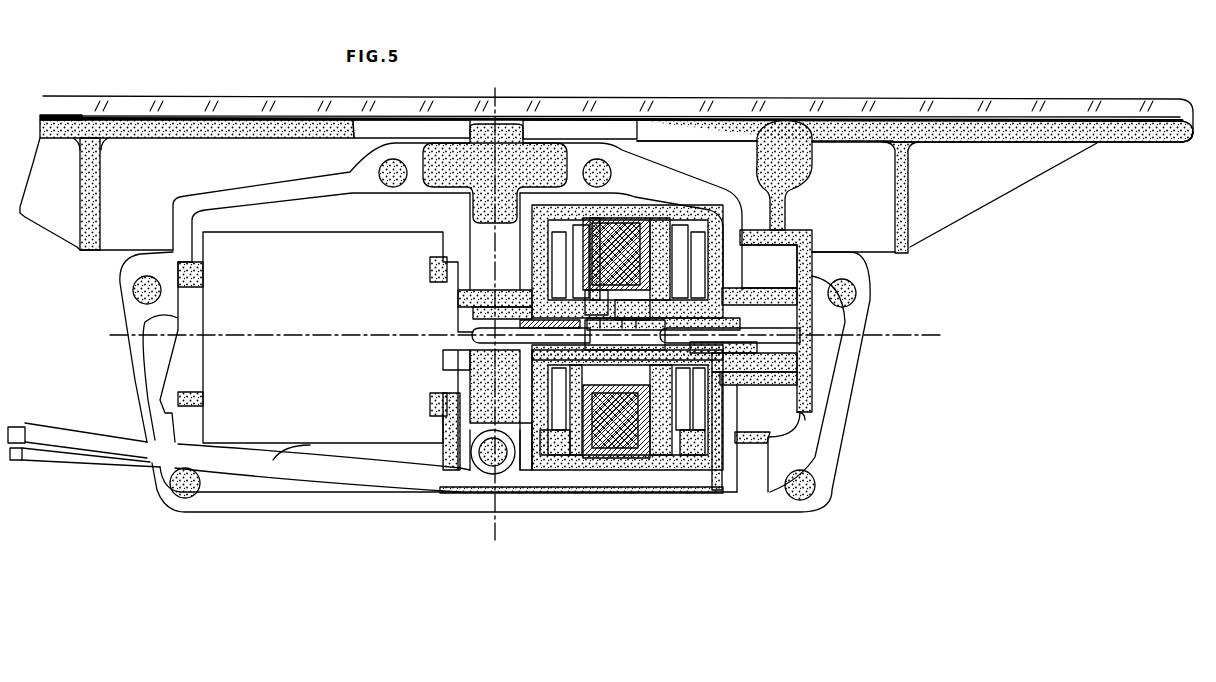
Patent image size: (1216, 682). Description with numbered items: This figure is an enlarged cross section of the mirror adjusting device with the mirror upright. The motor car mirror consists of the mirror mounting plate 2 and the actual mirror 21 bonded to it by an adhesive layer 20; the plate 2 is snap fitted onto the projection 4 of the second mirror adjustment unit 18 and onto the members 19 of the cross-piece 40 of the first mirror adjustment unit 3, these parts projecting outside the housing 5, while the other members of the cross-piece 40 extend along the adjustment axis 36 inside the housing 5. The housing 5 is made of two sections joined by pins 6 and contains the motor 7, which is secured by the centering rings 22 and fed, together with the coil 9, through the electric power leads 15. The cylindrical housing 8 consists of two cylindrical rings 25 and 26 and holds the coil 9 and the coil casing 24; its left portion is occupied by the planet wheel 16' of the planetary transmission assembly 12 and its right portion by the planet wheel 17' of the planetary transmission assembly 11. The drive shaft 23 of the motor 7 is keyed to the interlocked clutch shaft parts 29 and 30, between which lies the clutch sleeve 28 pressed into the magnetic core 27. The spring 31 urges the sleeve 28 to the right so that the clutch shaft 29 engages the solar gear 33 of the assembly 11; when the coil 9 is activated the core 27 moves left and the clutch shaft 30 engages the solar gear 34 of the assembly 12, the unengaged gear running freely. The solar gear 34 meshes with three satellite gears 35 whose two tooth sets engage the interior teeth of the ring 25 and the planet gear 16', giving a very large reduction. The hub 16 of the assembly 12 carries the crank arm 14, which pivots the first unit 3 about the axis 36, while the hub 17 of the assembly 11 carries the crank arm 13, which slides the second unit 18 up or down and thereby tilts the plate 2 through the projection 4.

The mirror mounting plate 2 is at (163, 127).
The first mirror adjustment unit 3 is at (547, 215).
The projection 4 is at (790, 128).
The housing 5 is at (130, 357).
The pins 6 is at (133, 289).
The motor 7 is at (311, 384).
The cylindrical housing 8 is at (668, 237).
The coil 9 is at (618, 425).
The planetary transmission assembly 11 is at (810, 256).
The planetary transmission assembly 12 is at (553, 270).
The crank arm 13 is at (808, 382).
The crank arm 14 is at (458, 292).
The electric power leads 15 is at (48, 452).
The hub 16 is at (481, 326).
The planet wheel 16' is at (628, 166).
The hub 17 is at (738, 339).
The planet wheel 17' is at (776, 238).
The second mirror adjustment unit 18 is at (812, 240).
The members 19 is at (497, 222).
The adhesive layer 20 is at (50, 114).
The mirror 21 is at (125, 103).
The centering rings 22 is at (193, 397).
The drive shaft 23 is at (450, 395).
The coil casing 24 is at (600, 450).
The ring 25 is at (565, 455).
The ring 26 is at (690, 388).
The magnetic core 27 is at (700, 215).
The clutch sleeve 28 is at (655, 395).
The clutch shaft part 29 is at (755, 350).
The clutch shaft part 30 is at (658, 440).
The spring 31 is at (630, 420).
The solar gear 33 is at (745, 388).
The solar gear 34 is at (490, 450).
The satellite gears 35 is at (540, 440).
The adjustment axis 36 is at (705, 410).
The cross-piece 40 is at (453, 150).